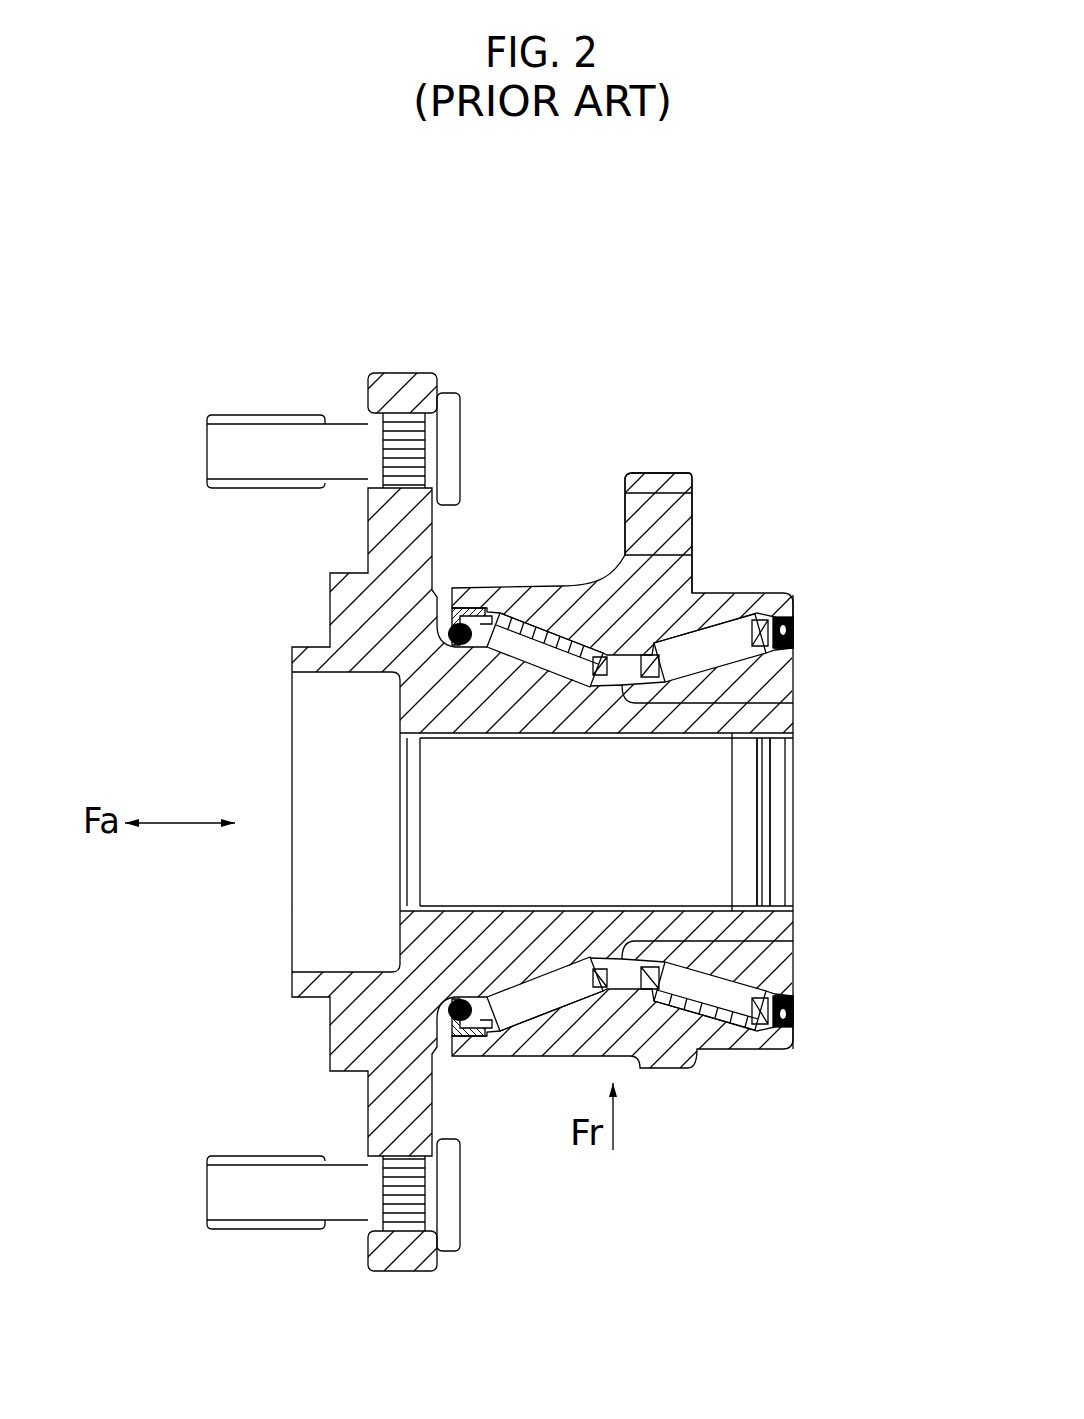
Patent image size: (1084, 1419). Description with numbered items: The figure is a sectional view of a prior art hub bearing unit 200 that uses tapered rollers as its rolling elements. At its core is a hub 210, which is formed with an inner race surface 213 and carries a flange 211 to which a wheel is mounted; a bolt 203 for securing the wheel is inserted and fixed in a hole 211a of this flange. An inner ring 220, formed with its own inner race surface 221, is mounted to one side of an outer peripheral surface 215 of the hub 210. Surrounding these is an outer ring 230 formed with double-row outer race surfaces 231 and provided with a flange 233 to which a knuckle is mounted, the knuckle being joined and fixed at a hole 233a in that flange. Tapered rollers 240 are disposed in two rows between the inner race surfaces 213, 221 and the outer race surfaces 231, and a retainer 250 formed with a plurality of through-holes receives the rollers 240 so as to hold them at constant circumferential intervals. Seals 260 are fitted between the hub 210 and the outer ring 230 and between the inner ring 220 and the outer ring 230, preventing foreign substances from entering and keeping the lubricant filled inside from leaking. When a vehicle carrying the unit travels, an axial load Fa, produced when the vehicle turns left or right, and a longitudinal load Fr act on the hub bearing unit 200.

The hub bearing unit 200 is at (572, 317).
The bolt 203 is at (222, 452).
The hub 210 is at (306, 655).
The flange 211 is at (385, 410).
The hole 211a is at (385, 430).
The inner race surface 213 is at (563, 687).
The outer peripheral surface 215 is at (753, 723).
The inner ring 220 is at (780, 677).
The inner race surface 221 is at (733, 740).
The outer ring 230 is at (695, 565).
The outer race surfaces 231 is at (645, 620).
The flange 233 is at (662, 480).
The hole 233a is at (700, 520).
The tapered rollers 240 is at (723, 642).
The retainer 250 is at (480, 655).
The seals 260 is at (795, 632).